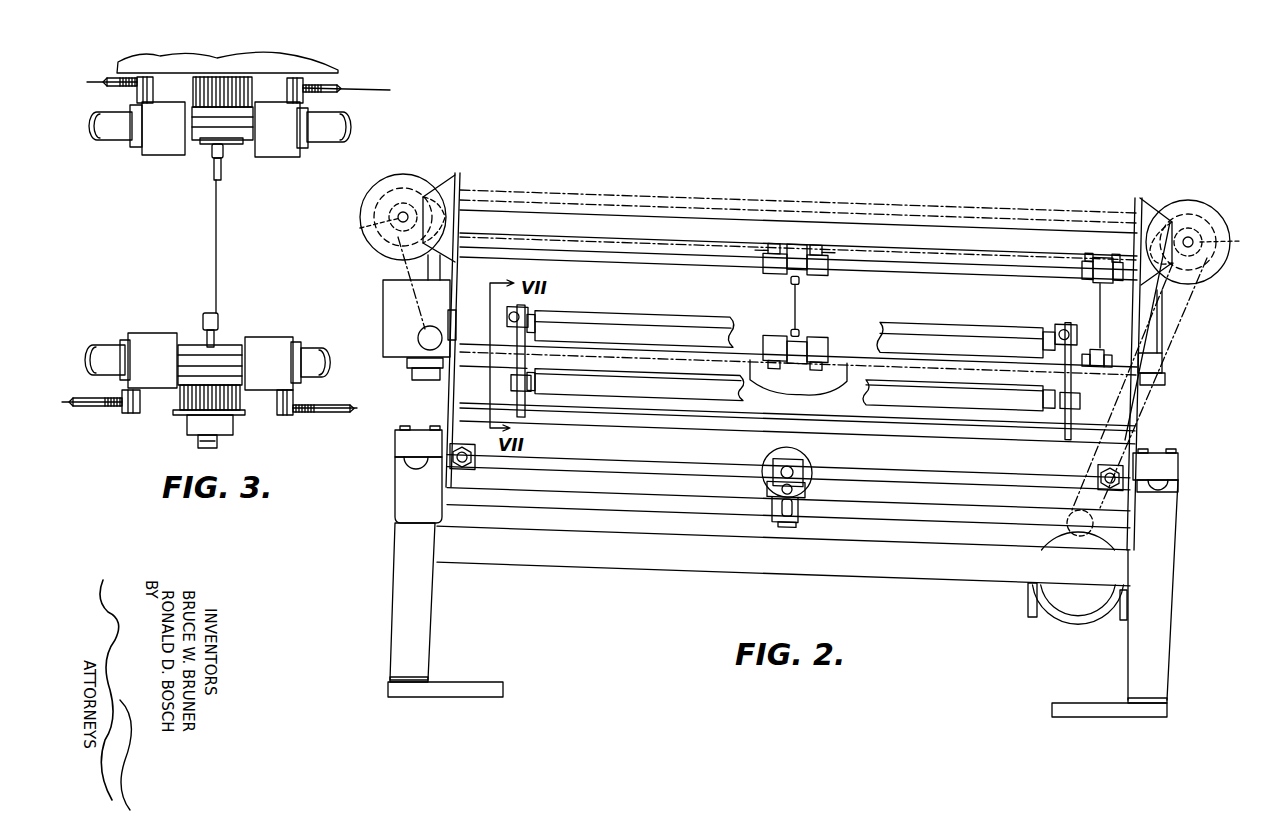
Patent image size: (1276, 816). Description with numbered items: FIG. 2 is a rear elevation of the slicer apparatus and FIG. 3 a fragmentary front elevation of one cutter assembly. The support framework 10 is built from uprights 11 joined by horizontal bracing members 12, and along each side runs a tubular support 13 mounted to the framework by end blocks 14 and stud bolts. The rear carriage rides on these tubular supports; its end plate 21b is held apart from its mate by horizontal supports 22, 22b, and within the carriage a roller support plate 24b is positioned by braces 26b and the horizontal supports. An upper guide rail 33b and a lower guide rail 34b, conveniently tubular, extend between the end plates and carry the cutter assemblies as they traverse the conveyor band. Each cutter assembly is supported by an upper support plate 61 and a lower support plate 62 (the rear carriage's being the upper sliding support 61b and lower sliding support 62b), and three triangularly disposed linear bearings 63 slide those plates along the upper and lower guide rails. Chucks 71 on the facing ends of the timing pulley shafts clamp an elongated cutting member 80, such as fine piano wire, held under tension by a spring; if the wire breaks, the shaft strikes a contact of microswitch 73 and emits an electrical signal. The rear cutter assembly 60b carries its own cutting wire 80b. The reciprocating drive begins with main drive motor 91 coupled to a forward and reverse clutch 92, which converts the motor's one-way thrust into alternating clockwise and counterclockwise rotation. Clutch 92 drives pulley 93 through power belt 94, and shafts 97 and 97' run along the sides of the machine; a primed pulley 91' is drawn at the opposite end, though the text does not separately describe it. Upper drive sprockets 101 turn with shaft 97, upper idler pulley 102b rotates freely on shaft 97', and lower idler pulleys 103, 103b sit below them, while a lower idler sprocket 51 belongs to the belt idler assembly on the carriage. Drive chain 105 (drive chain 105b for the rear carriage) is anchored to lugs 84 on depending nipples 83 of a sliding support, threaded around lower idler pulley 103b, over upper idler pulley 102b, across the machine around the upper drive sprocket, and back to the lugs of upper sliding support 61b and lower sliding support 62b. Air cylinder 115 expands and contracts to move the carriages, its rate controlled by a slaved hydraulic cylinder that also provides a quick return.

In FIG. 2, the support framework 10 is at (1212, 664).
In FIG. 2, the uprights 11 is at (393, 562).
In FIG. 2, the horizontal bracing members 12 is at (763, 567).
In FIG. 2, the tubular support 13 is at (412, 460).
In FIG. 2, the end blocks 14 is at (398, 440).
In FIG. 2, the end plate 21b is at (461, 281).
In FIG. 3, the horizontal supports 22 is at (322, 72).
In FIG. 2, the horizontal supports 22 is at (954, 250).
In FIG. 2, the horizontal support 22b is at (465, 363).
In FIG. 2, the roller support plate 24b is at (540, 400).
In FIG. 2, the brace 26b is at (481, 411).
In FIG. 2, the upper guide rail 33b is at (589, 262).
In FIG. 2, the lower guide rail 34b is at (465, 322).
In FIG. 2, the lower idler sprocket 51 is at (1170, 368).
In FIG. 3, the direction of movement 60b is at (183, 245).
In FIG. 3, the upper support plate 61 is at (290, 160).
In FIG. 2, the upper support plate 61b is at (788, 273).
In FIG. 3, the lower support plate 62 is at (262, 333).
In FIG. 2, the lower support plate 62b is at (806, 335).
In FIG. 3, the linear bearings 63 is at (150, 148).
In FIG. 3, the chucks 71 is at (213, 172).
In FIG. 3, the microswitch 73 is at (232, 420).
In FIG. 3, the cutting member 80 is at (218, 250).
In FIG. 2, the cutting member 80b is at (798, 308).
In FIG. 3, the depending nipples 83 is at (132, 414).
In FIG. 3, the lugs 84 is at (334, 93).
In FIG. 2, the main drive motor 91 is at (1078, 599).
In FIG. 2, the pulley 91' is at (403, 197).
In FIG. 2, the forward and reverse clutch 92 is at (1115, 622).
In FIG. 2, the pulley 93 is at (392, 242).
In FIG. 2, the power belt 94 is at (1143, 408).
In FIG. 2, the shaft 97 is at (1217, 225).
In FIG. 2, the shaft 97' is at (433, 176).
In FIG. 2, the upper drive sprockets 101 is at (1236, 240).
In FIG. 2, the upper idler pulley 102b is at (357, 229).
In FIG. 2, the lower idler pulleys 103 is at (1170, 358).
In FIG. 2, the lower idler pulley 103b is at (383, 338).
In FIG. 3, the drive chain 105 is at (328, 413).
In FIG. 2, the drive chain 105b is at (860, 362).
In FIG. 2, the air cylinder 115 is at (805, 463).